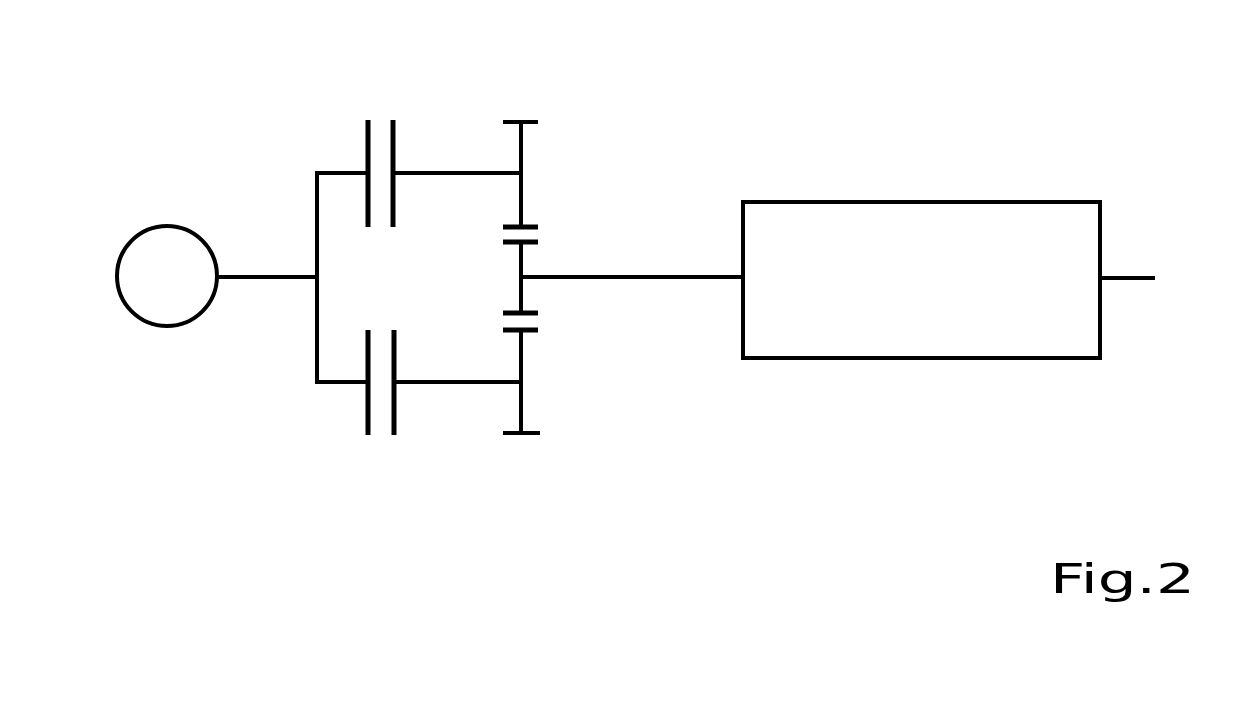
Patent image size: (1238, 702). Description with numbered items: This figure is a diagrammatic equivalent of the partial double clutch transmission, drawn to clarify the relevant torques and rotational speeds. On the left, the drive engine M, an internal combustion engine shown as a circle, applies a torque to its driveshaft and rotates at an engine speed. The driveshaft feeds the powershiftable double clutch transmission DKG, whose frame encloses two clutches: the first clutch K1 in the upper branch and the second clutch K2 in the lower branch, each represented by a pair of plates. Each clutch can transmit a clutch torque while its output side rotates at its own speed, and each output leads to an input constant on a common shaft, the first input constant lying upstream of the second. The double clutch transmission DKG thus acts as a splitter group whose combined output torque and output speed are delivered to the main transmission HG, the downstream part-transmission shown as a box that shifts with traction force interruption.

The drive engine M is at (162, 330).
The double clutch transmission DKG is at (348, 158).
The first clutch K1 is at (370, 118).
The second clutch K2 is at (368, 435).
The main transmission HG is at (860, 178).